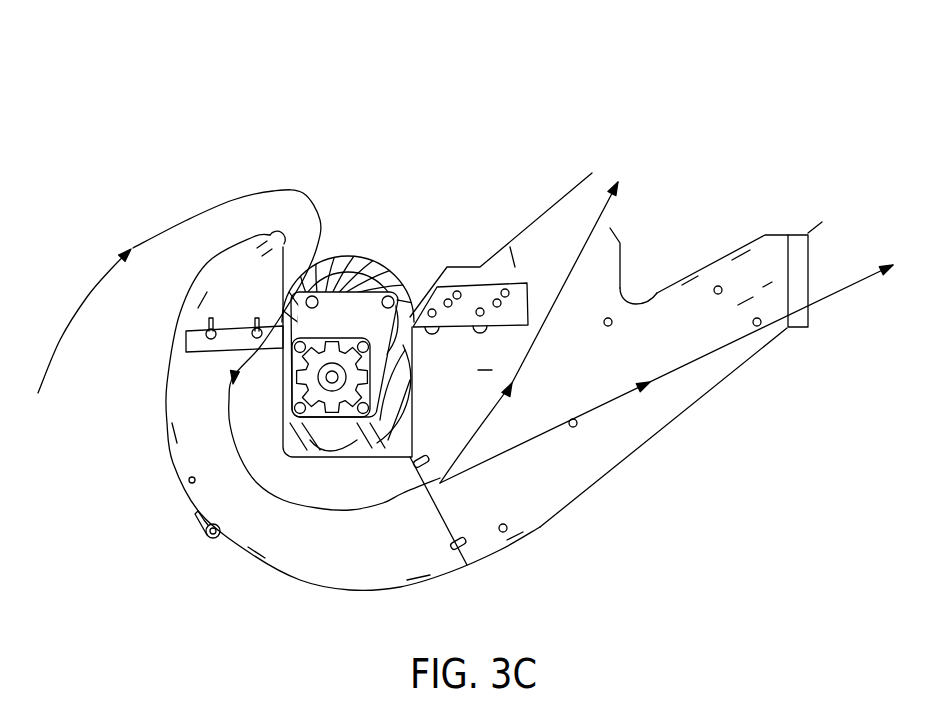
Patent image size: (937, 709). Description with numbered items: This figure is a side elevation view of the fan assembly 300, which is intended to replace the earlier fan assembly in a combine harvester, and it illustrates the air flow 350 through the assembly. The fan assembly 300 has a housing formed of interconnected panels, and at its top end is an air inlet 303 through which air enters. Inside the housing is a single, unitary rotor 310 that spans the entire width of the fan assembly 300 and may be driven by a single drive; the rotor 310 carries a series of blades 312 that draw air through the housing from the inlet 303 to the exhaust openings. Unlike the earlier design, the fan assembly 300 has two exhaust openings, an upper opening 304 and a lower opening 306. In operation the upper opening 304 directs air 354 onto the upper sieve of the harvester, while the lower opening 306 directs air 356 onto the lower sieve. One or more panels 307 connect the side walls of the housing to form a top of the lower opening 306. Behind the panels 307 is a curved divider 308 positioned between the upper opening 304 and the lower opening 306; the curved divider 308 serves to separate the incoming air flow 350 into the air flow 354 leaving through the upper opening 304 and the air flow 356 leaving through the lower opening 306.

The fan assembly 300 is at (128, 97).
The air flow 350 is at (232, 193).
The air inlet 303 is at (352, 186).
The rotor 310 is at (383, 258).
The blades 312 is at (331, 377).
The air 354 is at (576, 258).
The air 356 is at (697, 360).
The upper opening 304 is at (611, 227).
The curved divider 308 is at (633, 301).
The panels 307 is at (678, 282).
The lower opening 306 is at (809, 252).